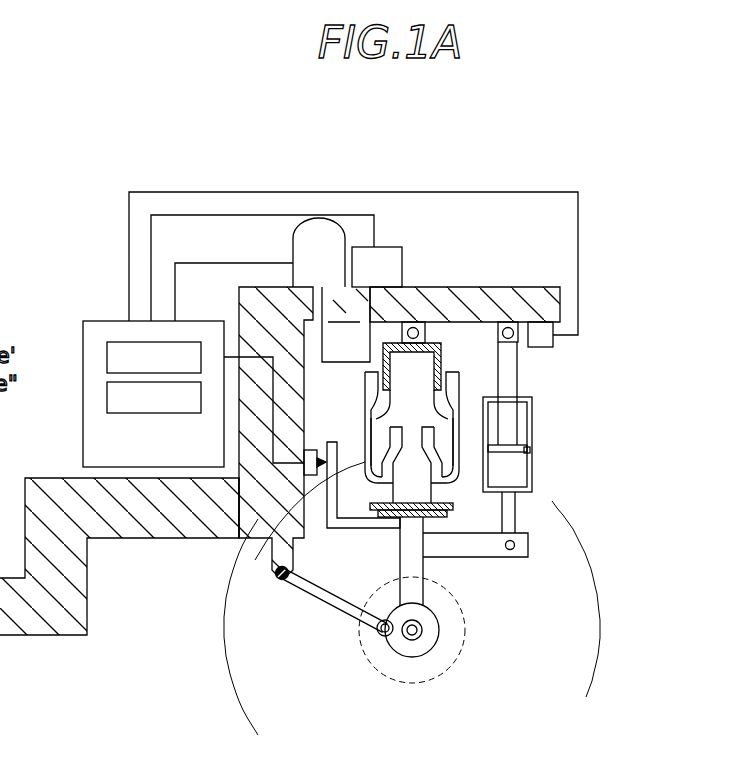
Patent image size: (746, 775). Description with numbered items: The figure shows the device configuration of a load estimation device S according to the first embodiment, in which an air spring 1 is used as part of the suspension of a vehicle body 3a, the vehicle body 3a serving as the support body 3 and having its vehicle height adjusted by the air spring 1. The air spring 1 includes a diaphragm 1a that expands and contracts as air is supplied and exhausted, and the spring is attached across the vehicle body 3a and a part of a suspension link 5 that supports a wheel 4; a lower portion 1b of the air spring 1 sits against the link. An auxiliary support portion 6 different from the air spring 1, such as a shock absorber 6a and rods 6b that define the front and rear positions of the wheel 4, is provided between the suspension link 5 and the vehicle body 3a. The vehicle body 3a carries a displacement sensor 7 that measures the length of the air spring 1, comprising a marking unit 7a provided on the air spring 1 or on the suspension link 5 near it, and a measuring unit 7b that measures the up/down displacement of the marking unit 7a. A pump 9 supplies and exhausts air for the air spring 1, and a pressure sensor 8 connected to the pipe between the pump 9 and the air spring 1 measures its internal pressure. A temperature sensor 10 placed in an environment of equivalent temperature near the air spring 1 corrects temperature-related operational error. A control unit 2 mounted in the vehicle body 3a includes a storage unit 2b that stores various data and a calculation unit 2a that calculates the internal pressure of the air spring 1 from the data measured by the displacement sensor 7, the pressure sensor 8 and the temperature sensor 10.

The load estimation device S is at (123, 249).
The air spring 1 is at (452, 366).
The diaphragm 1a is at (377, 381).
The injector flange plate 1b is at (437, 490).
The control unit 2 is at (83, 345).
The calculation unit 2a is at (154, 359).
The storage unit 2b is at (154, 399).
The support body 3 is at (399, 433).
The vehicle body 3a is at (32, 638).
The wheel 4 is at (532, 498).
The suspension link 5 is at (425, 583).
The auxiliary support portion 6 is at (475, 545).
The shock absorber 6a is at (532, 431).
The rods 6b is at (318, 600).
The displacement sensor 7 is at (231, 601).
The marking unit 7a is at (275, 540).
The measuring unit 7b is at (293, 470).
The pressure sensor 8 is at (377, 267).
The pump 9 is at (319, 252).
The temperature sensor 10 is at (538, 347).